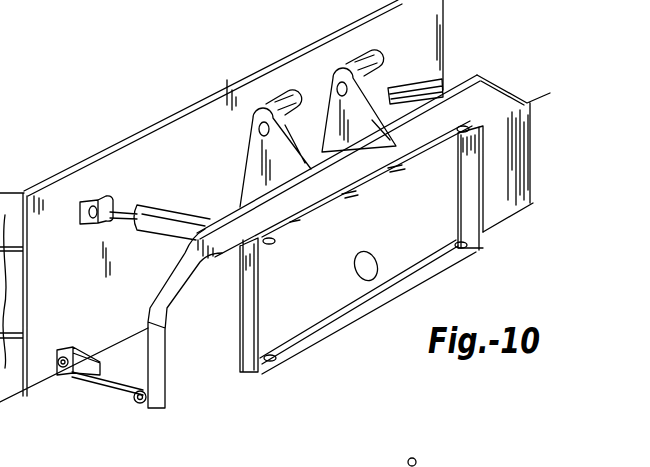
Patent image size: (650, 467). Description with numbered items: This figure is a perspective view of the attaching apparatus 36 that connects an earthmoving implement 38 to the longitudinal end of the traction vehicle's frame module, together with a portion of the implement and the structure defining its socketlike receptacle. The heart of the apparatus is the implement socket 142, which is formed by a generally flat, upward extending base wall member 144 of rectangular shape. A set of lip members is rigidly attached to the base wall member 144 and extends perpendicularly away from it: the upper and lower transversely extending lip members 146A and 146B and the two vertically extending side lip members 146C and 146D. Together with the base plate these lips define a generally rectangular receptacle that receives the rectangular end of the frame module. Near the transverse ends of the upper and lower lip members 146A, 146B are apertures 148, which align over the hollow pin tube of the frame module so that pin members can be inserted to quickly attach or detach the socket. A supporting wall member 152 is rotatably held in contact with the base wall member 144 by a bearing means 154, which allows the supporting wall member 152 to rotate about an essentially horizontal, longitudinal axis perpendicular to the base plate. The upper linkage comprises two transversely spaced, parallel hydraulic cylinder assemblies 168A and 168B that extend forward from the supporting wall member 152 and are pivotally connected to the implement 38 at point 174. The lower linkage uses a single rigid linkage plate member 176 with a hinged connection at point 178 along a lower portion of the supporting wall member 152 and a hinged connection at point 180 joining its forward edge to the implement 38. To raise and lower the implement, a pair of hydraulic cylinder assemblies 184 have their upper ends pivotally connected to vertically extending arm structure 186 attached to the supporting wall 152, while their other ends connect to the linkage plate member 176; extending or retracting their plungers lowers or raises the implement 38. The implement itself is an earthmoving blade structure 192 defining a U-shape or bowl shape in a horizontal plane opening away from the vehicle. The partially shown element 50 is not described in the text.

The apparatus 36 is at (464, 74).
The implement 38 is at (223, 69).
The machine body 50 is at (10, 95).
The implement socket 142 is at (365, 320).
The base wall member 144 is at (387, 250).
The upper lip member 146A is at (325, 213).
The lower lip member 146B is at (307, 337).
The side lip member 146C is at (243, 342).
The side lip member 146D is at (472, 192).
The apertures 148 is at (528, 106).
The supporting wall member 152 is at (483, 115).
The bearing means 154 is at (376, 267).
The hydraulic cylinder assembly 168A is at (154, 208).
The hydraulic cylinder assembly 168B is at (405, 92).
The pivotable connection point 174 is at (84, 225).
The linkage plate member 176 is at (123, 372).
The hinged connection point 178 is at (138, 404).
The hinged connection point 180 is at (79, 346).
The hydraulic cylinder assemblies 184 is at (243, 177).
The arm structure 186 is at (334, 96).
The blade structure 192 is at (95, 156).